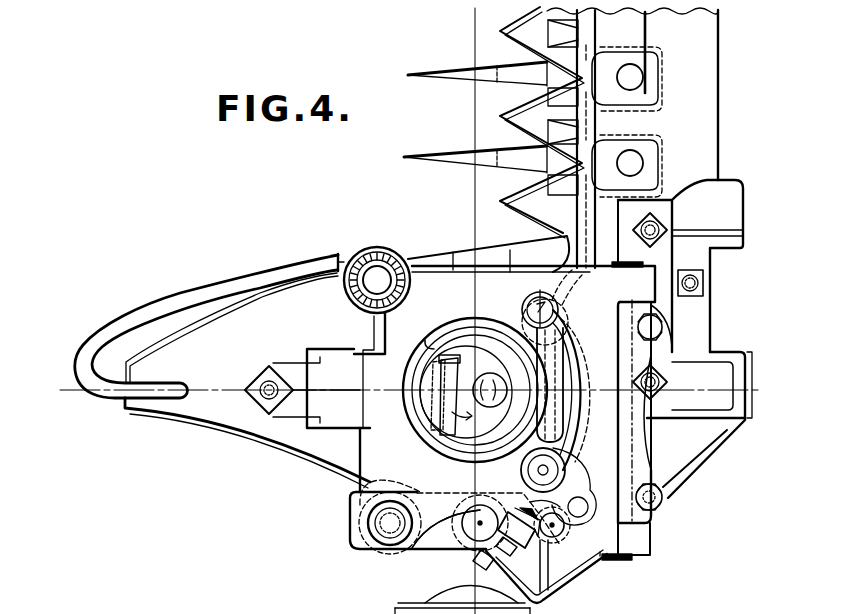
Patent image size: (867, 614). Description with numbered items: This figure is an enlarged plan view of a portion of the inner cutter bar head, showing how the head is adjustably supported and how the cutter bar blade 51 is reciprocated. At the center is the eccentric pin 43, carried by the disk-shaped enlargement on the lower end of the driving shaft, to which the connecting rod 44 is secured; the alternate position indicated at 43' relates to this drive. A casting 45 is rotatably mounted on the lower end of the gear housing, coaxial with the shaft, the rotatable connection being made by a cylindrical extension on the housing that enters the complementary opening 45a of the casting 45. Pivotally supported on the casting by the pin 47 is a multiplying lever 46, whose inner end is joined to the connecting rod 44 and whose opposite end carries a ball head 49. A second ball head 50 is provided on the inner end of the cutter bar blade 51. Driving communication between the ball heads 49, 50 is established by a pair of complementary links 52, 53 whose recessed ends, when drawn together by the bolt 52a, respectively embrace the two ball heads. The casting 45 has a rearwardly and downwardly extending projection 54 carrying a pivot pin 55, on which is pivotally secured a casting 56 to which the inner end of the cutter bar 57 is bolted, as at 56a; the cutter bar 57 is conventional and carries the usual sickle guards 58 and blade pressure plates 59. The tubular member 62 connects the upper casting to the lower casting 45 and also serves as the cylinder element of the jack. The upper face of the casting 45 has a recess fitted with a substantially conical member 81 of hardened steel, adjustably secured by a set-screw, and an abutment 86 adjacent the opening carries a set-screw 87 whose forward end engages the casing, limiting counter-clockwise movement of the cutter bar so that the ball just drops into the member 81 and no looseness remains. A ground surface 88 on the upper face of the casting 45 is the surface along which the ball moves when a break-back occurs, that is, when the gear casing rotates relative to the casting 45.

The eccentric pin 43 is at (469, 367).
The pawl swing arc 43' is at (446, 541).
The connecting rod 44 is at (463, 440).
The casting 45 is at (428, 290).
The complementary opening 45a is at (425, 340).
The multiplying lever 46 is at (422, 494).
The pin 47 is at (390, 533).
The ball head 49 is at (583, 562).
The ball head 50 is at (572, 320).
The cutter bar blade 51 is at (543, 212).
The complementary link 52 is at (575, 353).
The bolt 52a is at (587, 390).
The complementary link 53 is at (570, 418).
The projection 54 is at (640, 537).
The pivot pin 55 is at (626, 554).
The casting 56 is at (660, 440).
The bolting of cutter bar 56a is at (660, 228).
The cutter bar 57 is at (693, 107).
The sickle guards 58 is at (460, 65).
The cutter bar blade pressure plates 59 is at (640, 32).
The tubular member 62 is at (371, 262).
The substantially conical member 81 is at (563, 478).
The abutment 86 is at (517, 540).
The set-screw 87 is at (478, 560).
The ground surface 88 is at (568, 438).